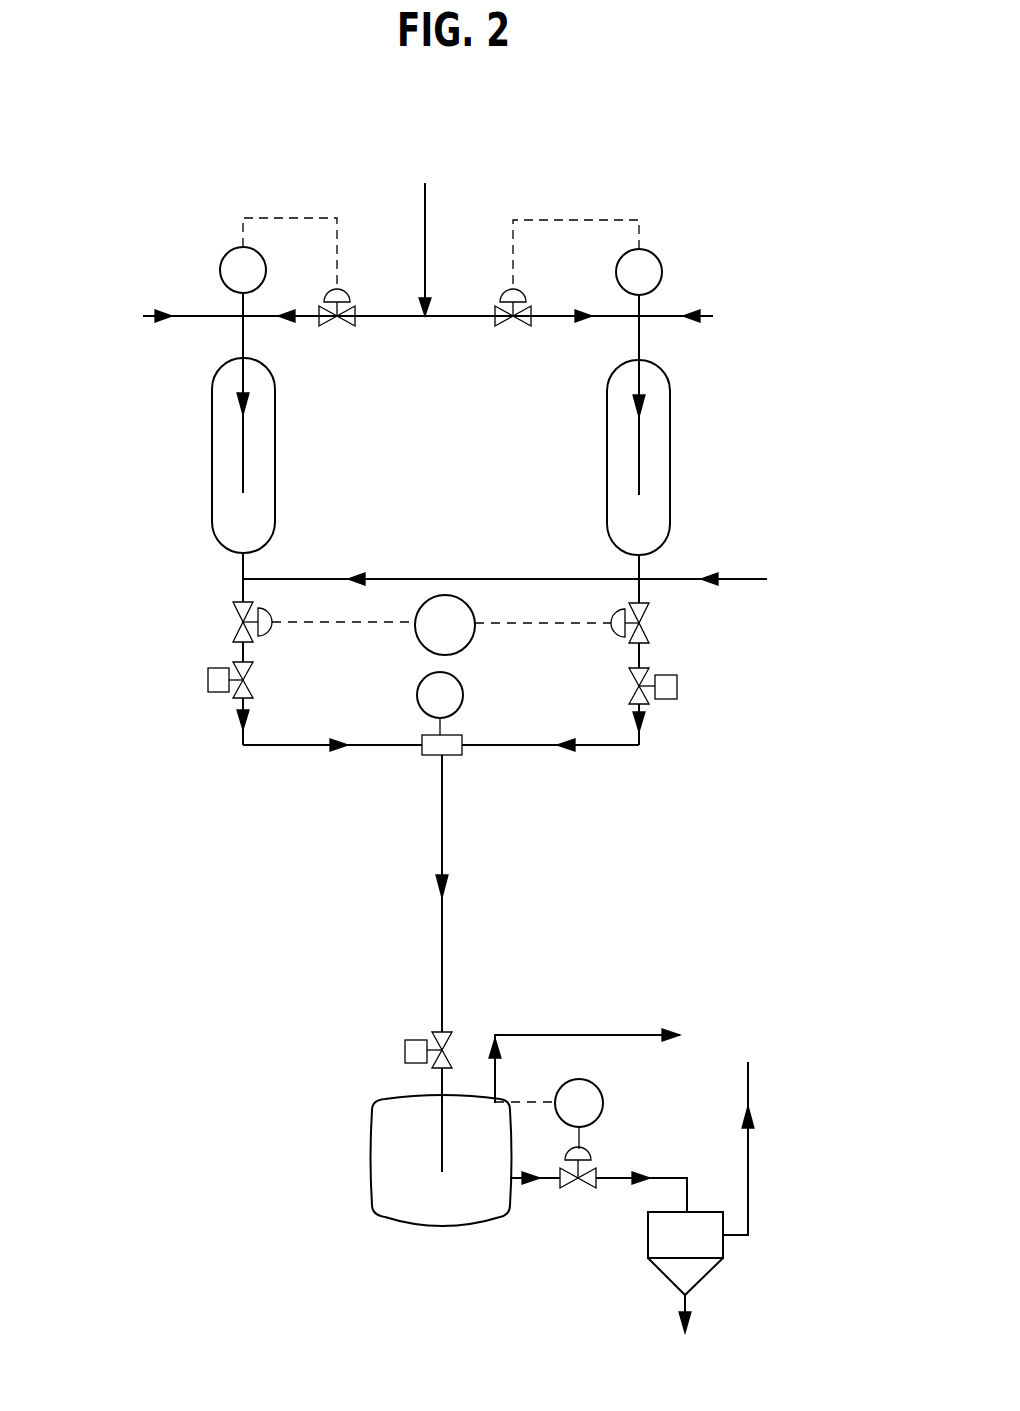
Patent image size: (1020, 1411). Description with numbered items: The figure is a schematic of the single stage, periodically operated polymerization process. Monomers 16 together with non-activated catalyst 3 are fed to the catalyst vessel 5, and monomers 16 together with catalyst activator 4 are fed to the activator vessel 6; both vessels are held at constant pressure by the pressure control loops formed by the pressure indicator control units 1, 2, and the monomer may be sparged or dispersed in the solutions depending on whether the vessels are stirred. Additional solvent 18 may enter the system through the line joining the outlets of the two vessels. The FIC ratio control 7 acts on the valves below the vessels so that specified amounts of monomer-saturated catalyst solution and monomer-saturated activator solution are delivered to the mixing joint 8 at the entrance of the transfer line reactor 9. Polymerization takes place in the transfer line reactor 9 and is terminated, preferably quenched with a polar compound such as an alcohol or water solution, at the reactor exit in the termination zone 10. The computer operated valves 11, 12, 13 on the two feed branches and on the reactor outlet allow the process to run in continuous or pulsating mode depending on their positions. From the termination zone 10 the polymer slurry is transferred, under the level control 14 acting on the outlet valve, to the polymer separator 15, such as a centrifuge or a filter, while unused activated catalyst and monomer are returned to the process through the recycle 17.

The pressure indicator control unit 1 is at (225, 264).
The pressure indicator control unit 2 is at (660, 263).
The non-activated catalyst 3 is at (153, 316).
The catalyst activator 4 is at (699, 316).
The catalyst vessel 5 is at (275, 465).
The activator vessel 6 is at (607, 468).
The FIC ratio control 7 is at (470, 612).
The mixing joint 8 is at (450, 757).
The transfer line reactor 9 is at (450, 893).
The termination zone 10 is at (372, 1178).
The computer operated valve 11 is at (208, 683).
The computer operated valve 12 is at (677, 688).
The computer operated valve 13 is at (405, 1050).
The level control 14 is at (604, 1094).
The polymer separator 15 is at (648, 1240).
The monomers 16 is at (426, 231).
The recycle 17 is at (745, 1132).
The additional solvent 18 is at (525, 580).